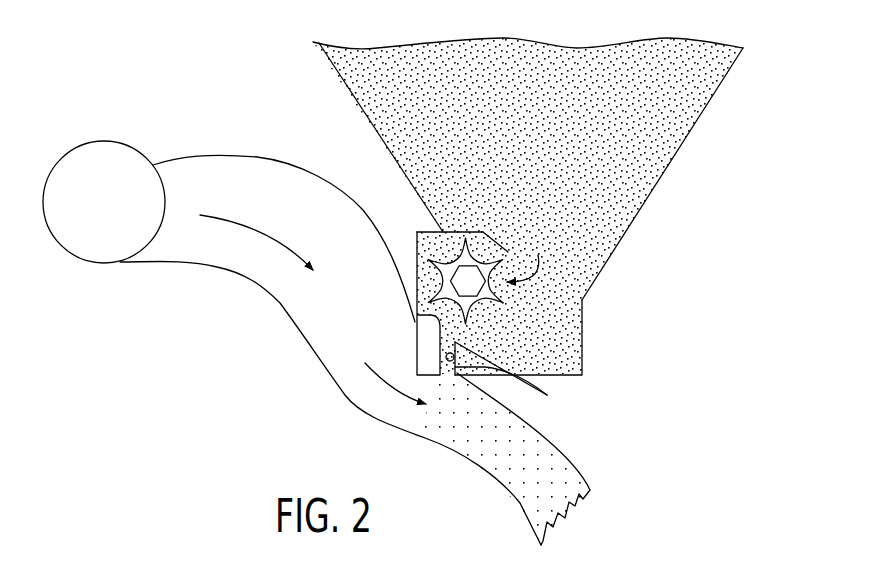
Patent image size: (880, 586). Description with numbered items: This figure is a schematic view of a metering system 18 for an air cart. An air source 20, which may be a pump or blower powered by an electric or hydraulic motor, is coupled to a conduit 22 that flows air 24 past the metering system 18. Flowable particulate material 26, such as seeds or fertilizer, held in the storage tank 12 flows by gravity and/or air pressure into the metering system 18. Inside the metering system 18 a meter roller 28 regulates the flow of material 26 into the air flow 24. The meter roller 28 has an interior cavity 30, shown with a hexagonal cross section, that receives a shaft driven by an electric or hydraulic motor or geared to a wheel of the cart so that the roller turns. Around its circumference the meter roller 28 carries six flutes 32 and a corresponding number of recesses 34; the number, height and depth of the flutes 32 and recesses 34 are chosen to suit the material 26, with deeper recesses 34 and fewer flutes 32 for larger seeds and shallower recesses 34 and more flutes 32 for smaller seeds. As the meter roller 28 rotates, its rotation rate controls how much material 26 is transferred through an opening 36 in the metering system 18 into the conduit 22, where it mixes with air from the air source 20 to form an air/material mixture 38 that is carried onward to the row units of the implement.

The storage tank 12 is at (337, 74).
The metering system 18 is at (401, 226).
The air source 20 is at (102, 141).
The conduit 22 is at (300, 328).
The air 24 is at (260, 233).
The flowable particulate material 26 is at (677, 133).
The meter roller 28 is at (530, 255).
The interior cavity 30 is at (449, 299).
The flutes 32 is at (442, 262).
The recesses 34 is at (483, 245).
The opening 36 is at (510, 380).
The air/material mixture 38 is at (500, 463).